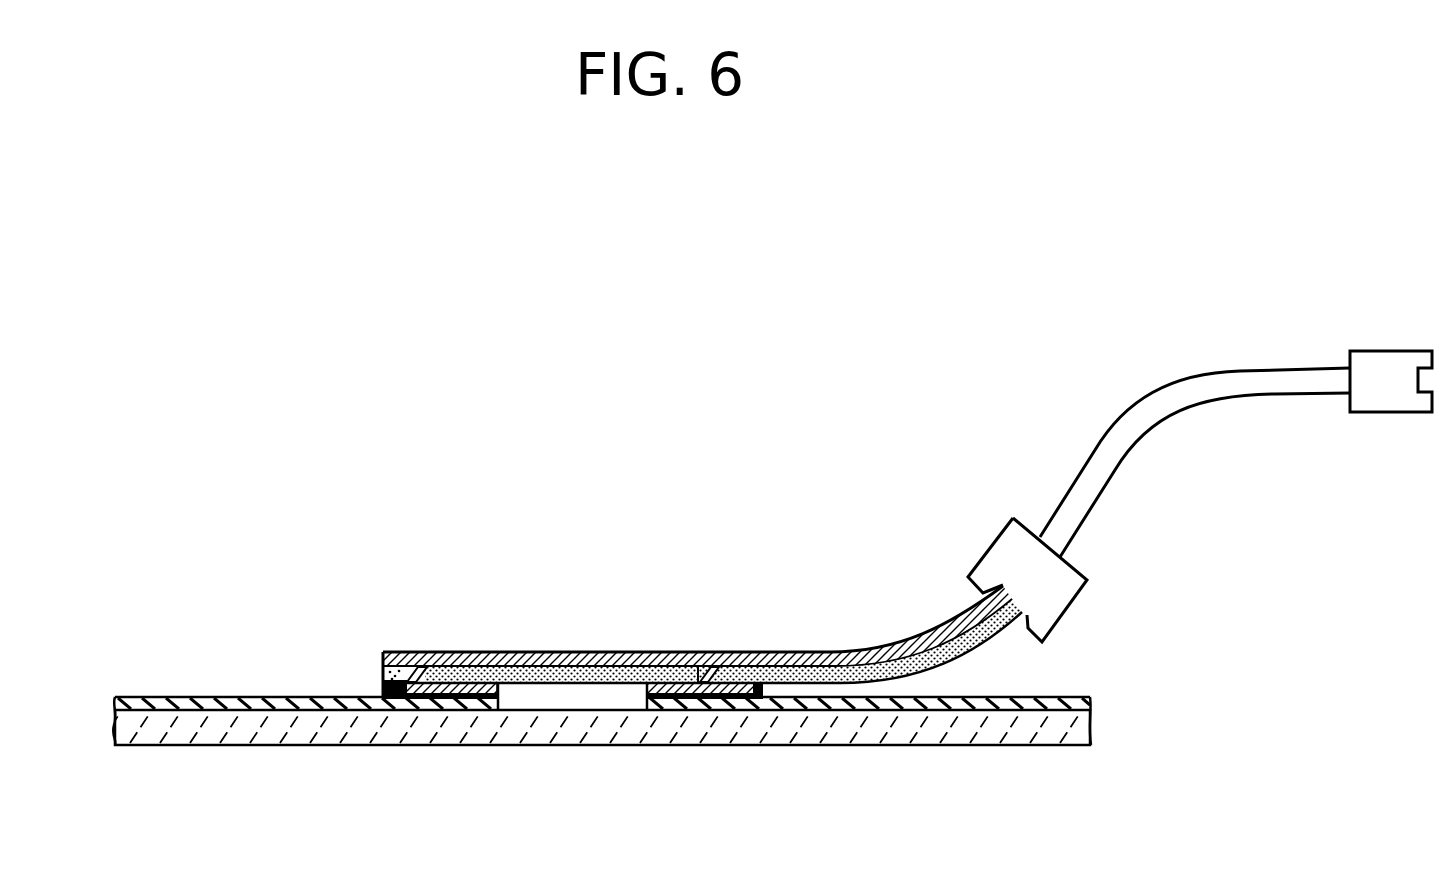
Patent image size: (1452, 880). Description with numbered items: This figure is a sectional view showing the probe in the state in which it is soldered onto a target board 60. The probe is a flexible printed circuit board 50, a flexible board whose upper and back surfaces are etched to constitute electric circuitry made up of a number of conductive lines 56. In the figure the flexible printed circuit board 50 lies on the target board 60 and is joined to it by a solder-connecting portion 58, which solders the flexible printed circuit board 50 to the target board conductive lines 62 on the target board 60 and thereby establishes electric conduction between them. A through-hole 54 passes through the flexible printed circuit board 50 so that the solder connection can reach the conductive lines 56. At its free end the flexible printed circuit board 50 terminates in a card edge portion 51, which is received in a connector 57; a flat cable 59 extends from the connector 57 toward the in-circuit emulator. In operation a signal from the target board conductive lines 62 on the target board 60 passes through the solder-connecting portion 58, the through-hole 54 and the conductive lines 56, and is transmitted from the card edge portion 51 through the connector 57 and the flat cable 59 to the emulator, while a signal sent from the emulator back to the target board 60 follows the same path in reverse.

The flexible printed circuit board 50 is at (531, 668).
The card edge portion 51 is at (930, 622).
The through-hole 54 is at (411, 672).
The conductive lines 56 is at (642, 653).
The connector 57 is at (1009, 537).
The solder-connecting portion 58 is at (383, 686).
The flat cable 59 is at (1242, 382).
The target board 60 is at (549, 732).
The target board conductive lines 62 is at (155, 708).